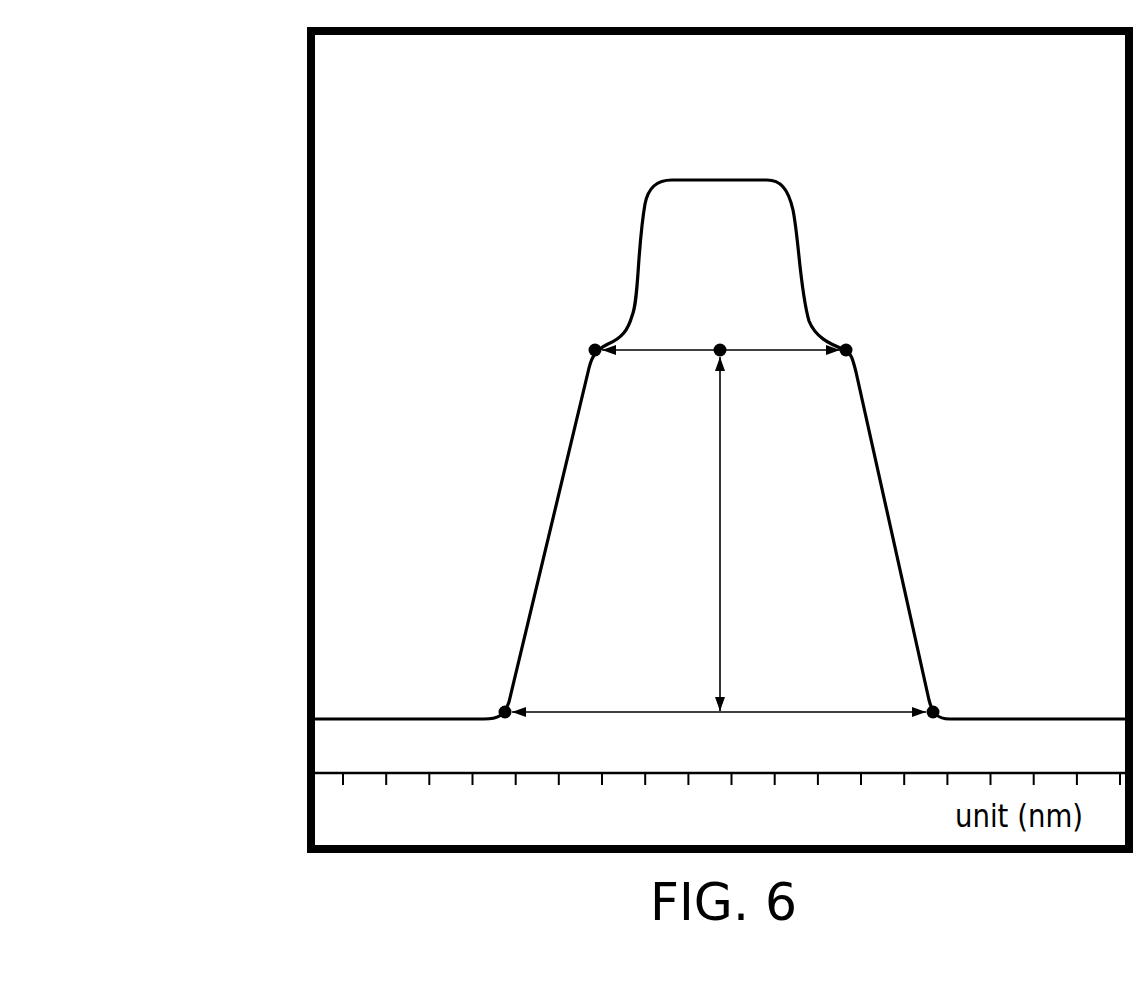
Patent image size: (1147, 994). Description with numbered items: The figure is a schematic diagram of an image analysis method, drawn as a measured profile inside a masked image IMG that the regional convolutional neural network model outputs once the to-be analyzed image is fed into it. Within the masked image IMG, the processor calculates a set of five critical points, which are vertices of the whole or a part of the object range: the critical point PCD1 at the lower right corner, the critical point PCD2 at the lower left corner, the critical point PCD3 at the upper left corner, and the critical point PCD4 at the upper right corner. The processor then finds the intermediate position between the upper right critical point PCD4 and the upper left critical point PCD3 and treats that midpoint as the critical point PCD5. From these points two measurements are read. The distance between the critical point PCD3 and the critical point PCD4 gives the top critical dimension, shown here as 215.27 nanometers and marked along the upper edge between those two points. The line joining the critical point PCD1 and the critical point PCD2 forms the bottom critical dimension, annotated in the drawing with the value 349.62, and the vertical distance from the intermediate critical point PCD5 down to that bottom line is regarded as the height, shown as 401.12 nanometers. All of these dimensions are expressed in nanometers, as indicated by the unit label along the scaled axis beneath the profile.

The masked image IMG is at (307, 443).
The critical point PCD1 is at (940, 708).
The critical point PCD2 is at (500, 709).
The critical point PCD3 is at (590, 347).
The critical point PCD4 is at (852, 347).
The critical point PCD5 is at (714, 347).
The top critical dimension 215.27 is at (777, 350).
The height 401.12 is at (770, 534).
The distance between PCD2 and PCD1 349.62 is at (719, 696).